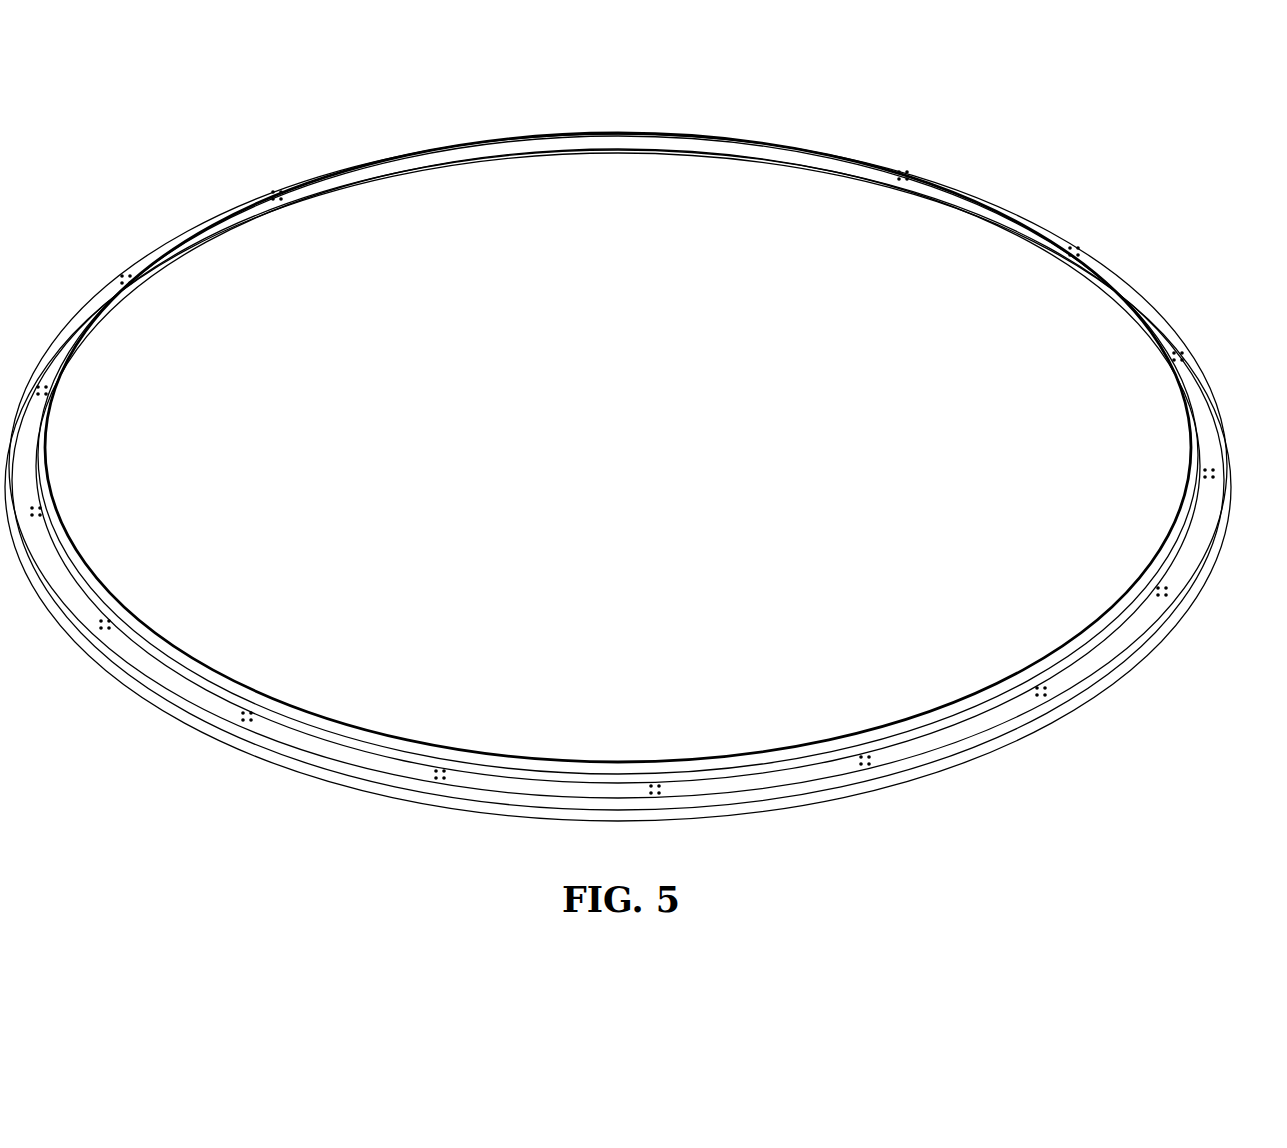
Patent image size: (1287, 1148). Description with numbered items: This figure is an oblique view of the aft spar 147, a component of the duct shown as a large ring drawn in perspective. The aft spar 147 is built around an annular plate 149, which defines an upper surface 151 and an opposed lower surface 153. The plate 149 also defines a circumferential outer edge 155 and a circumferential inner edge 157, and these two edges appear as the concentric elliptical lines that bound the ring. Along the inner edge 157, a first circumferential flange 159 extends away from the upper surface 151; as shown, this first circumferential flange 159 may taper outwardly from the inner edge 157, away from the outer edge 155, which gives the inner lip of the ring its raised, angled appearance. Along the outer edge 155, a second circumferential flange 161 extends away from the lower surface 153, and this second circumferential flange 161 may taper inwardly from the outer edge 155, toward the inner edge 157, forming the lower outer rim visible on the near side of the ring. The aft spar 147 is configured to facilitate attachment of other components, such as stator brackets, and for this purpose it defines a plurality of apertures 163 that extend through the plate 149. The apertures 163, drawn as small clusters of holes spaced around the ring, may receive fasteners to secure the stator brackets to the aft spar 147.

The aft spar 147 is at (618, 484).
The annular plate 149 is at (204, 696).
The upper surface 151 is at (166, 256).
The lower surface 153 is at (183, 262).
The circumferential outer edge 155 is at (372, 775).
The circumferential inner edge 157 is at (326, 738).
The first circumferential flange 159 is at (462, 761).
The second circumferential flange 161 is at (473, 811).
The apertures 163 is at (1055, 690).